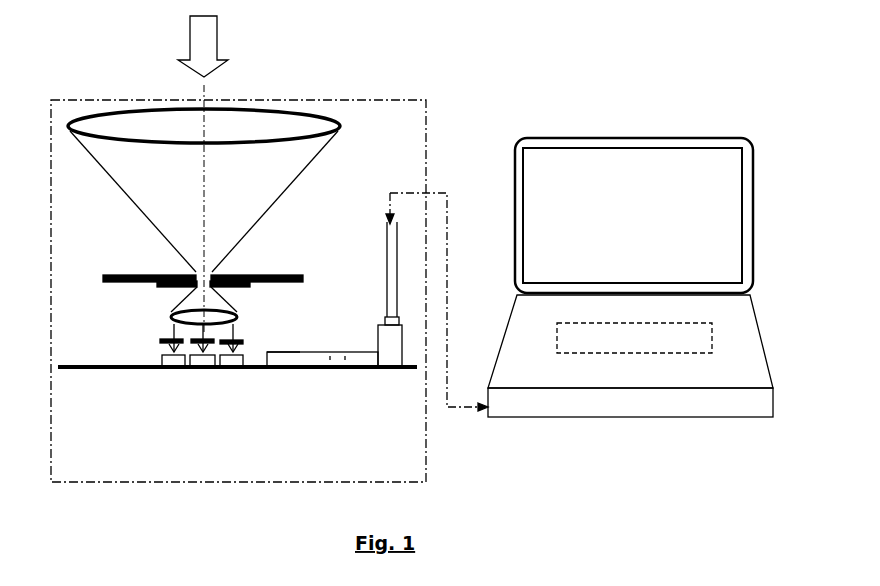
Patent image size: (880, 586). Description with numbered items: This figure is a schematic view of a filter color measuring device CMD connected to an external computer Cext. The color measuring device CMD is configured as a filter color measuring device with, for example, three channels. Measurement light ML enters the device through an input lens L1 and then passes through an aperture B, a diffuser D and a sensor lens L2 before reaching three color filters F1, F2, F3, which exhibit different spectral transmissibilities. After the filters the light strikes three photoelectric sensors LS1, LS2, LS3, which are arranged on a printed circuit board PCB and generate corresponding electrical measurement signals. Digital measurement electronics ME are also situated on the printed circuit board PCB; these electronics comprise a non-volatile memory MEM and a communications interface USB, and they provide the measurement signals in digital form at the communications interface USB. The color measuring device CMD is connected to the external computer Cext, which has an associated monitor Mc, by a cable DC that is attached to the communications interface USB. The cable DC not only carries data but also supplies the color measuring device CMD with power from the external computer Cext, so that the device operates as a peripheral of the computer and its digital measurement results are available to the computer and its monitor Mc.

The measurement light ML is at (198, 33).
The color measuring device CMD is at (405, 112).
The input lens L1 is at (310, 125).
The cable DC is at (445, 192).
The monitor Mc is at (635, 163).
The aperture B is at (275, 275).
The diffuser D is at (157, 284).
The sensor lens L2 is at (171, 316).
The color filter F1 is at (160, 340).
The color filter F2 is at (212, 339).
The color filter F3 is at (243, 342).
The printed circuit board PCB is at (98, 372).
The photoelectric sensor LS1 is at (173, 369).
The photoelectric sensor LS2 is at (205, 369).
The photoelectric sensor LS3 is at (236, 369).
The non-volatile memory MEM is at (340, 369).
The measurement electronics ME is at (285, 358).
The communications interface USB is at (389, 355).
The external computer Cext is at (637, 404).